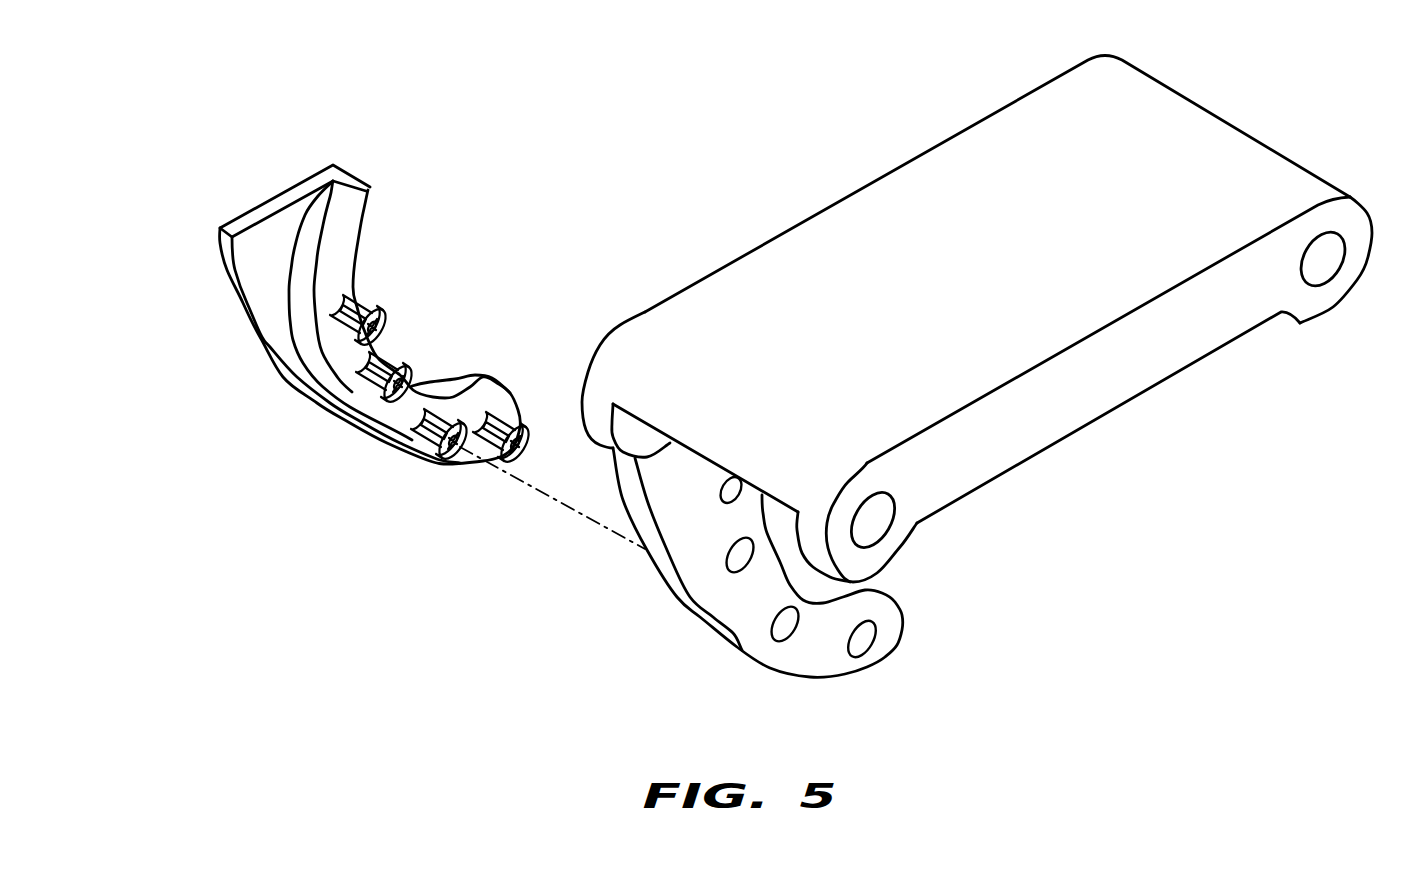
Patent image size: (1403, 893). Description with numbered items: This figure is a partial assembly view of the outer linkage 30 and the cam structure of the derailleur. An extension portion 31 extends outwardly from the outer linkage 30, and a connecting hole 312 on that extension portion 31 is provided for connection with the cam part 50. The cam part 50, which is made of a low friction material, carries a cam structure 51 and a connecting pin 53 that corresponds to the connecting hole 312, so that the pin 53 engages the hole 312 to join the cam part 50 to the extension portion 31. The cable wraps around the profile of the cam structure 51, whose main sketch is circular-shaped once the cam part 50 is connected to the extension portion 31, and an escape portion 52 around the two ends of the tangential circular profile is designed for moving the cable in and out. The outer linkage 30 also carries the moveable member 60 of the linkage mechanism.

The outer linkage 30 is at (895, 193).
The extension portion 31 is at (737, 610).
The connecting hole 312 is at (857, 642).
The cam part 50 is at (180, 325).
The cam structure 51 is at (327, 378).
The escape portion 52 is at (332, 197).
The connecting pin 53 is at (402, 370).
The moveable member 60 is at (1323, 263).